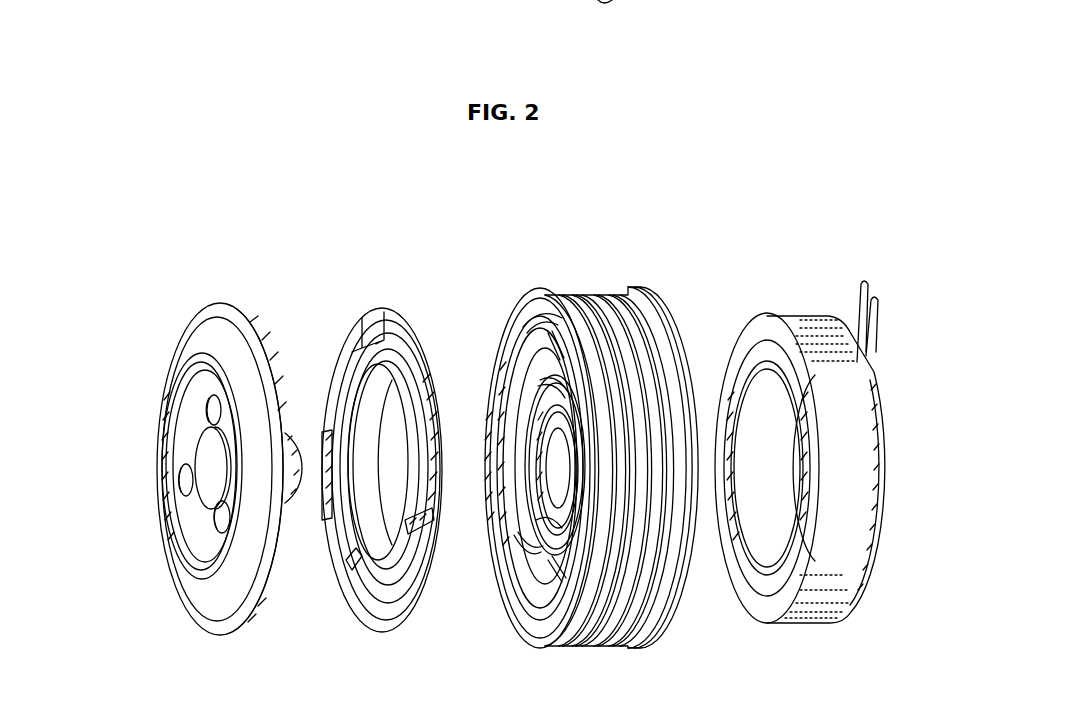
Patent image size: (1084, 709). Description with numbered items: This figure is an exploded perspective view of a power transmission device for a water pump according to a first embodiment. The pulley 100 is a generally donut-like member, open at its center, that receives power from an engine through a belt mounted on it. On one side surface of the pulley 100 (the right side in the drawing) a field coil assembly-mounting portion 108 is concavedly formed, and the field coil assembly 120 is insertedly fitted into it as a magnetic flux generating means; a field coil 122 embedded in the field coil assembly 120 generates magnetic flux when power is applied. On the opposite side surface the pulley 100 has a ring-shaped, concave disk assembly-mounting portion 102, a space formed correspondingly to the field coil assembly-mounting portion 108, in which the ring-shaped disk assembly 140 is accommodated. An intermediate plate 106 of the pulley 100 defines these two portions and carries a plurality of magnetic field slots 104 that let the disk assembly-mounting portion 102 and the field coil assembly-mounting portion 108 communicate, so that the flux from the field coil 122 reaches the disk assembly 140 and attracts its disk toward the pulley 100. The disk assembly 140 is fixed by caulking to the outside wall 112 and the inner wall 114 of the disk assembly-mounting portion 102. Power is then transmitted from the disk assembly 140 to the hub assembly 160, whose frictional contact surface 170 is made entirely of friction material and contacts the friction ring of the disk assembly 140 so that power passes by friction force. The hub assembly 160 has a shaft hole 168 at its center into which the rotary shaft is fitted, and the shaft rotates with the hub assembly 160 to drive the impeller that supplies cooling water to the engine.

The pulley 100 is at (541, 277).
The disk assembly-mounting portion 102 is at (530, 612).
The magnetic field slots 104 is at (522, 330).
The intermediate plate 106 is at (572, 650).
The field coil assembly-mounting portion 108 is at (687, 323).
The outside wall 112 is at (530, 600).
The inner wall 114 is at (578, 554).
The field coil assembly 120 is at (740, 305).
The field coil 122 is at (760, 598).
The disk assembly 140 is at (341, 305).
The hub assembly 160 is at (187, 297).
The shaft hole 168 is at (205, 473).
The frictional contact surface 170 is at (255, 336).